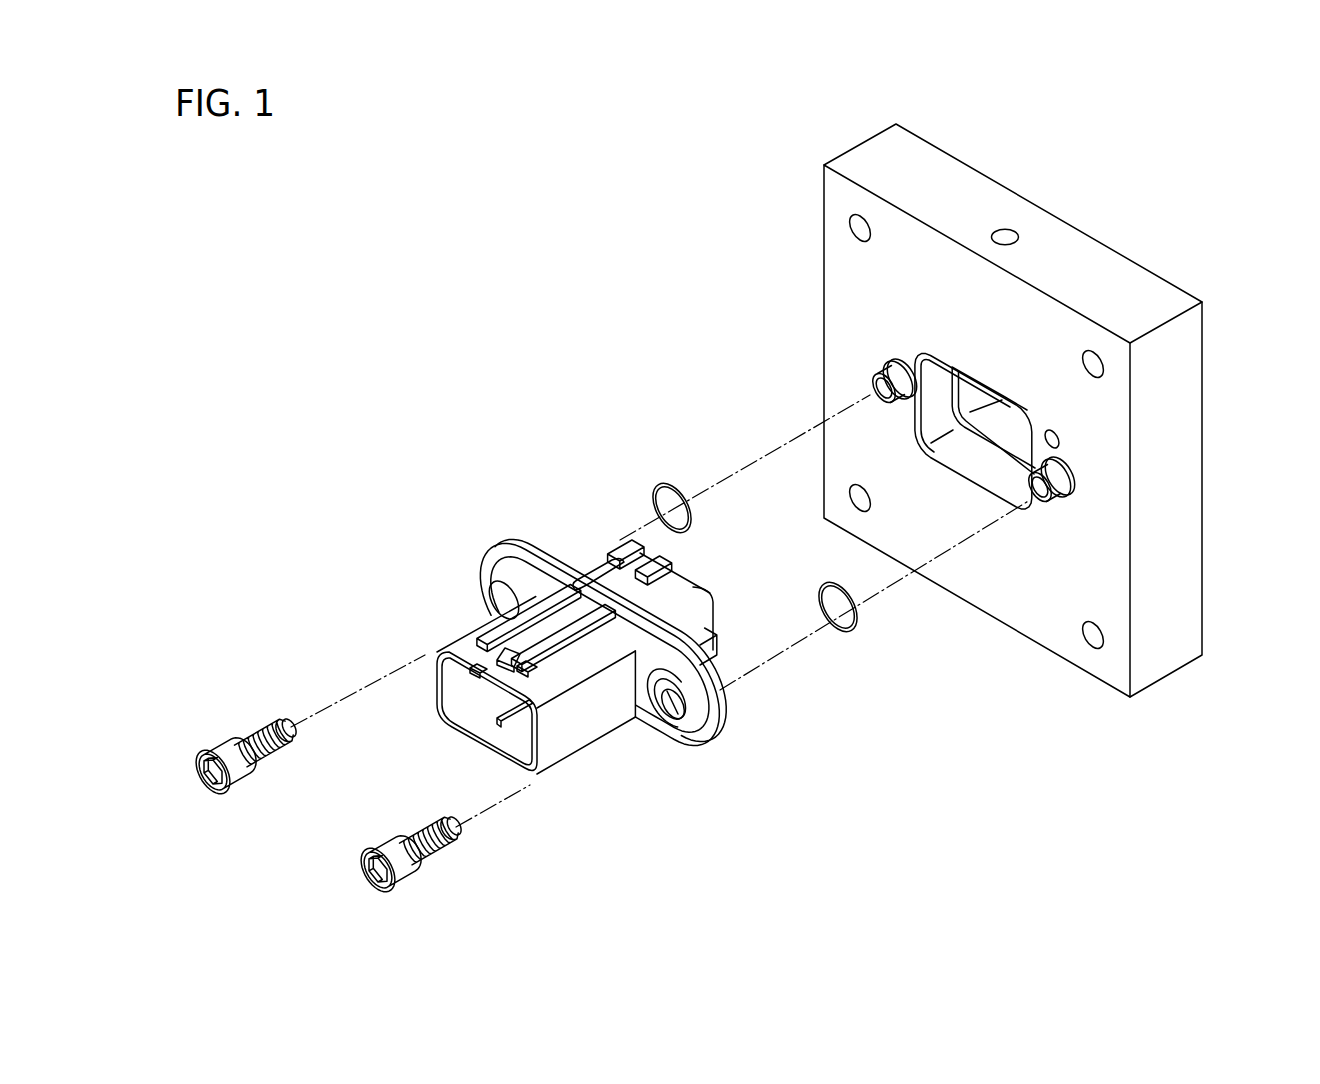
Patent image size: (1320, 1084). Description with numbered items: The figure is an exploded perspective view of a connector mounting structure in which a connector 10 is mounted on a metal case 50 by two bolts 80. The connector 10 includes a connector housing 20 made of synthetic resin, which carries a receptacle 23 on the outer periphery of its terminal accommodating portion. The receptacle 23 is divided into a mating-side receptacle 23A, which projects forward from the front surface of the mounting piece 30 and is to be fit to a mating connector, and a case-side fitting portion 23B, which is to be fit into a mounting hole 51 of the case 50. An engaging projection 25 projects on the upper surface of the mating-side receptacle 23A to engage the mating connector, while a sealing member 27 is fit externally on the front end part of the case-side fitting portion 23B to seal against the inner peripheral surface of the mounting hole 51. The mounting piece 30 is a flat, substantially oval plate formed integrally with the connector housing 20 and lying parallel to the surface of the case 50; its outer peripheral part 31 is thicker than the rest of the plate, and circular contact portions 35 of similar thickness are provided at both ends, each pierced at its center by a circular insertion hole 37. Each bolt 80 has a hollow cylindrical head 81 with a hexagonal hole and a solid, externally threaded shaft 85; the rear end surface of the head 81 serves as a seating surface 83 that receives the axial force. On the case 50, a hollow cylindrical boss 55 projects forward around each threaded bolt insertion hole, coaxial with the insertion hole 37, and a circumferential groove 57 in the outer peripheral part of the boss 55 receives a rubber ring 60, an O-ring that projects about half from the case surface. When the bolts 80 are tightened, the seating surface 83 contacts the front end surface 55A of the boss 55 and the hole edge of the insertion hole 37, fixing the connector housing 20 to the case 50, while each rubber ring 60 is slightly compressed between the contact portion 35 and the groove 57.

The connector 10 is at (596, 332).
The connector housing 20 is at (466, 643).
The receptacle 23 is at (550, 533).
The mating-side receptacle 23A is at (488, 566).
The case-side fitting portion 23B is at (612, 556).
The engaging projection 25 is at (470, 652).
The sealing member 27 is at (718, 608).
The mounting piece 30 is at (603, 659).
The outer peripheral part 31 is at (627, 737).
The contact portion 35 is at (667, 722).
The insertion hole 37 is at (678, 716).
The case 50 is at (1100, 423).
The mounting hole 51 is at (940, 387).
The boss 55 is at (877, 374).
The front end surface 55A is at (872, 392).
The groove 57 is at (900, 362).
The rubber ring 60 is at (659, 491).
The bolt 80 is at (335, 764).
The head 81 is at (206, 751).
The seating surface 83 is at (243, 784).
The shaft 85 is at (253, 740).